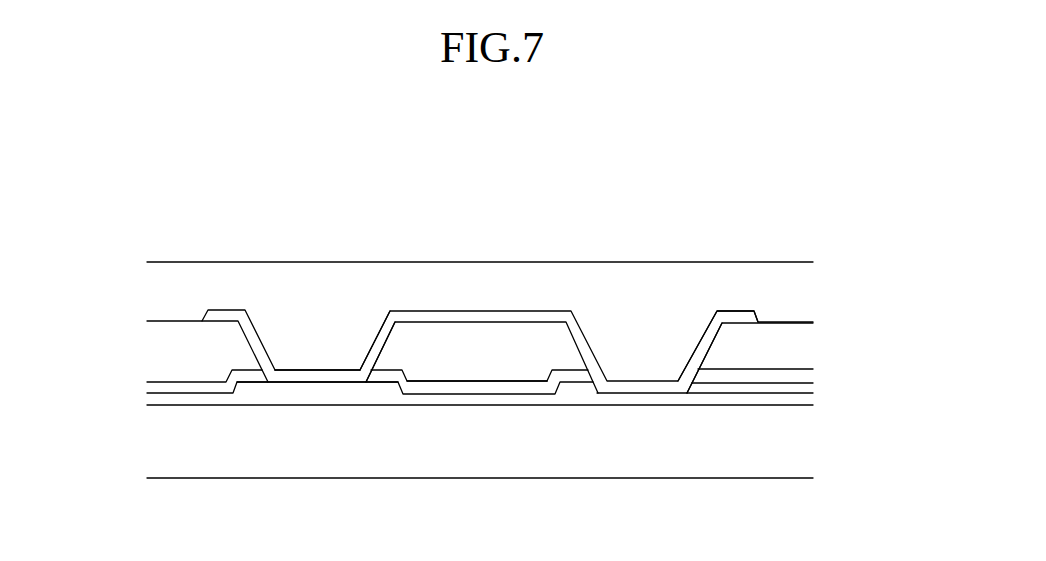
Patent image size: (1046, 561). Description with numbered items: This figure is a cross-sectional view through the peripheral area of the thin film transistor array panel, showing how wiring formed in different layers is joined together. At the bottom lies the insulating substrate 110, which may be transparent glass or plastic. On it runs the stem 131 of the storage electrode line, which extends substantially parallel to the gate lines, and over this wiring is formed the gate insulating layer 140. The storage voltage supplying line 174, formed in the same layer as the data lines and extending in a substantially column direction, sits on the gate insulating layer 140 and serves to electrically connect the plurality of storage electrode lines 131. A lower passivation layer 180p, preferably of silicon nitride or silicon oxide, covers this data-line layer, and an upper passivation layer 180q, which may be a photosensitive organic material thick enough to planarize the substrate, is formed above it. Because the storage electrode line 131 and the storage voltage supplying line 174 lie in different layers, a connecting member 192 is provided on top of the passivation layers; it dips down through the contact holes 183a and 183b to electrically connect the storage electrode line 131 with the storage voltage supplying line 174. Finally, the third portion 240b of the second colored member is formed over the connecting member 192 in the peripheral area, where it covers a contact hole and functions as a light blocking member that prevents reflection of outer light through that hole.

The insulating substrate 110 is at (383, 459).
The stem of storage electrode line 131 is at (643, 400).
The gate insulating layer 140 is at (520, 400).
The storage voltage supplying line 174 is at (325, 388).
The lower passivation layer 180p is at (450, 388).
The upper passivation layer 180q is at (522, 347).
The contact hole 183a is at (706, 350).
The contact hole 183b is at (368, 348).
The connecting member 192 is at (463, 318).
The third portion of second colored member 240b is at (253, 278).